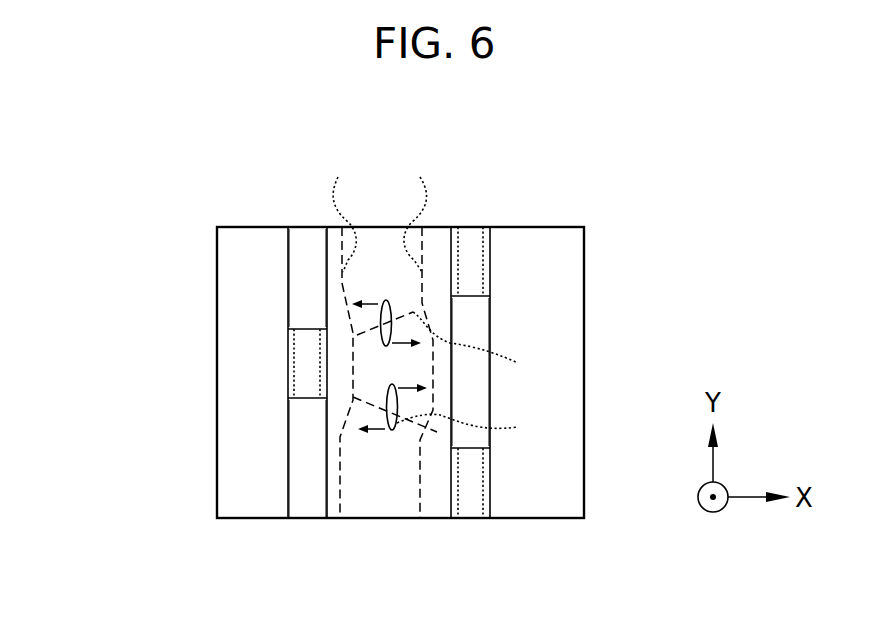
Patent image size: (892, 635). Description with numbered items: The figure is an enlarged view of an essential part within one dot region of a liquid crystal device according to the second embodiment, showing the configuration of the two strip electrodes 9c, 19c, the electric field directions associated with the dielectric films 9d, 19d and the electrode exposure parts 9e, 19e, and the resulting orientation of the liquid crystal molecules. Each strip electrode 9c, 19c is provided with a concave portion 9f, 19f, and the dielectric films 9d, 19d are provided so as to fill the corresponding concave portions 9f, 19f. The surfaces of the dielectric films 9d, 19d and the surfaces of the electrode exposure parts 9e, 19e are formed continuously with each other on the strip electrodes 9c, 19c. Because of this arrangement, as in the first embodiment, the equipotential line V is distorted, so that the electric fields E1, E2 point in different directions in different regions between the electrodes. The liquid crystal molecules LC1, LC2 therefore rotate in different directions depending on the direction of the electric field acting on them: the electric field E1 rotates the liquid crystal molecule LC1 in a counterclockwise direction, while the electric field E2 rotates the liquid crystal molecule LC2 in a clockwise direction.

The strip electrode 19c is at (107, 349).
The dielectric film 19d is at (288, 375).
The electrode exposure part 19e is at (288, 445).
The concave portion 19f is at (290, 341).
The strip electrode 9c is at (650, 245).
The dielectric film 9d is at (490, 263).
The electrode exposure part 9e is at (490, 345).
The concave portion 9f is at (488, 291).
The liquid crystal molecule LC1 is at (386, 300).
The liquid crystal molecule LC2 is at (393, 430).
The electric field E1 is at (485, 348).
The electric field E2 is at (477, 427).
The equipotential line V is at (381, 210).